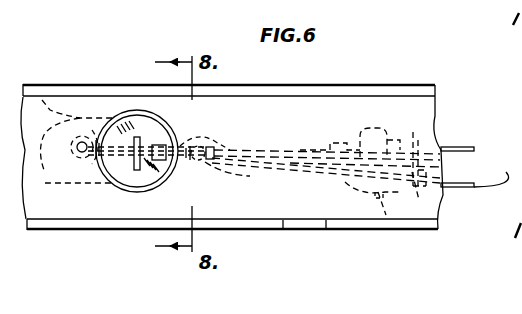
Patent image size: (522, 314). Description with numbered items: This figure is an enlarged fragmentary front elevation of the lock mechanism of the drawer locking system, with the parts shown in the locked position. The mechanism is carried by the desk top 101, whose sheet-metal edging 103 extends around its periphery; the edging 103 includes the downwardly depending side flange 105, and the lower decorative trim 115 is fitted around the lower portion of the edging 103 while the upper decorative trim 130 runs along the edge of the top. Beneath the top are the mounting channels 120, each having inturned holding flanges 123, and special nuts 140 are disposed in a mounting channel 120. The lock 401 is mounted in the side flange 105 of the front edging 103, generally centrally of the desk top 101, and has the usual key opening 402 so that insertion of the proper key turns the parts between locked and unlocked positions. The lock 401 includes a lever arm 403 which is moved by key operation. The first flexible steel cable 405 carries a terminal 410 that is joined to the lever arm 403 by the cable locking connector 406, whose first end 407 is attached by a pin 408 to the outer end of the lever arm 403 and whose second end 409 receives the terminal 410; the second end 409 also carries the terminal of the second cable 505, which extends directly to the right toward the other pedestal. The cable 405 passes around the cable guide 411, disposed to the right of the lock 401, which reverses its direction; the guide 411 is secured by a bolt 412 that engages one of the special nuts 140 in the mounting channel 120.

The desk top 101 is at (64, 81).
The edging 103 is at (94, 213).
The side flange 105 is at (283, 222).
The lower decorative trim 115 is at (326, 226).
The mounting channel 120 is at (421, 144).
The holding flange 123 is at (448, 148).
The upper decorative trim 130 is at (333, 88).
The special nut 140 is at (392, 150).
The lock 401 is at (124, 107).
The key opening 402 is at (135, 172).
The lever arm 403 is at (42, 100).
The first flexible steel cable 405 is at (277, 152).
The cable locking connector 406 is at (190, 162).
The first end 407 is at (60, 147).
The pin 408 is at (80, 156).
The second end 409 is at (322, 177).
The terminal 410 is at (230, 148).
The cable guide 411 is at (419, 200).
The bolt 412 is at (386, 215).
The cable 505 is at (447, 172).